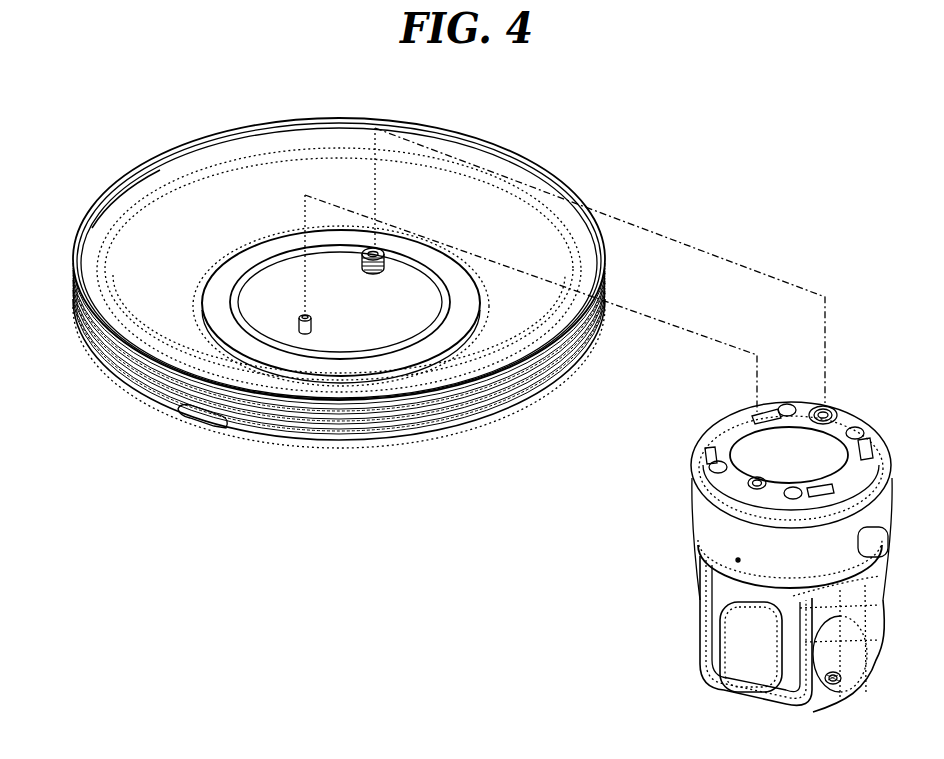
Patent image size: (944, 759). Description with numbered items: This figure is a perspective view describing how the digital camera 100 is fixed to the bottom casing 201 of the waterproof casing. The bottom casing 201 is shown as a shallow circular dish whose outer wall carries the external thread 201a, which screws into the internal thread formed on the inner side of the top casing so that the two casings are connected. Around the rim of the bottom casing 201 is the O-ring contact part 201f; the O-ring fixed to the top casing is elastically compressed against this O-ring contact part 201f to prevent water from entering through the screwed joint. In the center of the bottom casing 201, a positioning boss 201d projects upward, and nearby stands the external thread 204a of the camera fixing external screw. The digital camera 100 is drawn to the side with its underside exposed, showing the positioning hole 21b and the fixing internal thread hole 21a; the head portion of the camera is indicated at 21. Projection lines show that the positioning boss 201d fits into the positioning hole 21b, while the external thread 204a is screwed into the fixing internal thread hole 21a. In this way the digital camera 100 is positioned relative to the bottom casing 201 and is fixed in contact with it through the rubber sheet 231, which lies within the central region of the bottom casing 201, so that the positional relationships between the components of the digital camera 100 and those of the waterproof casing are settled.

The digital camera 100 is at (737, 557).
The camera head body 21 is at (710, 483).
The fixing internal thread hole 21a is at (805, 428).
The positioning hole 21b is at (753, 488).
The bottom casing 201 is at (428, 319).
The external thread 201a is at (208, 400).
The positioning boss 201d is at (312, 327).
The O-ring contact part 201f is at (103, 210).
The external thread of the camera fixing external screw 204a is at (376, 250).
The rubber sheet 231 is at (390, 308).